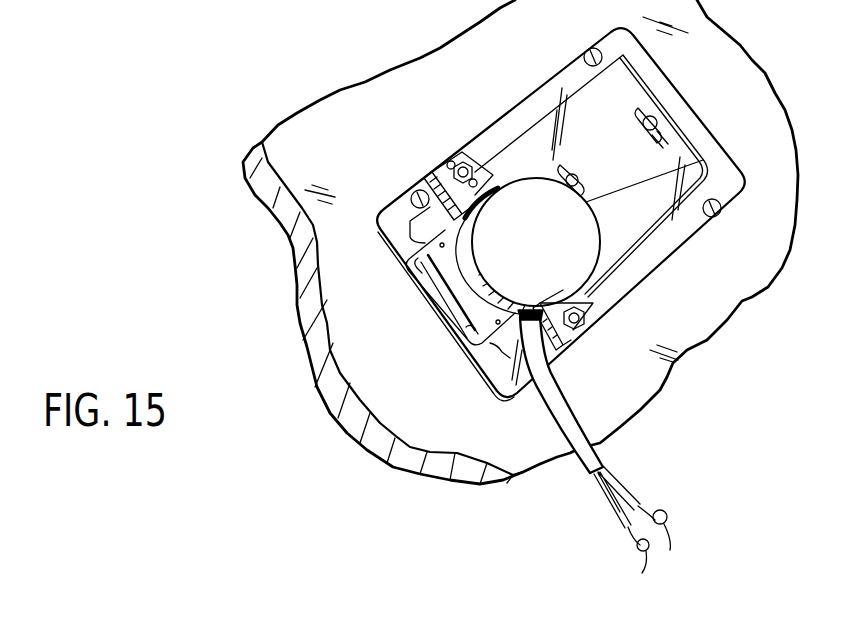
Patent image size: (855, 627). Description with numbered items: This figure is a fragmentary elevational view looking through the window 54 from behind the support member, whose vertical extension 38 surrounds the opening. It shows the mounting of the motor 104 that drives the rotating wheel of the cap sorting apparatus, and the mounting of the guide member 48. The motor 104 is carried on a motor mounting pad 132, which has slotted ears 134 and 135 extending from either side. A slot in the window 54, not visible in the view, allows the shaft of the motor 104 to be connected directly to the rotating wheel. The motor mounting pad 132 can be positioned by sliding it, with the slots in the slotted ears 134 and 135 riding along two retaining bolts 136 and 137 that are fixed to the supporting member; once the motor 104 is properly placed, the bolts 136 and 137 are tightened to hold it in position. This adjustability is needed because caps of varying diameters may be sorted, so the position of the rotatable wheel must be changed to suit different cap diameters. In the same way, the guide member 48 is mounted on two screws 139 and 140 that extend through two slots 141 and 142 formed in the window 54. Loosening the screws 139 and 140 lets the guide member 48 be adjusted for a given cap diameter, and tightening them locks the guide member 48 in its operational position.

The vertical extension 38 is at (297, 292).
The guide member 48 is at (640, 184).
The window 54 is at (550, 70).
The motor 104 is at (553, 255).
The motor mounting pad 132 is at (488, 146).
The slotted ear 134 is at (587, 313).
The slotted ear 135 is at (447, 172).
The retaining bolt 136 is at (582, 330).
The retaining bolt 137 is at (465, 152).
The screw 139 is at (578, 195).
The screw 140 is at (650, 115).
The slot 141 is at (663, 143).
The slot 142 is at (590, 198).